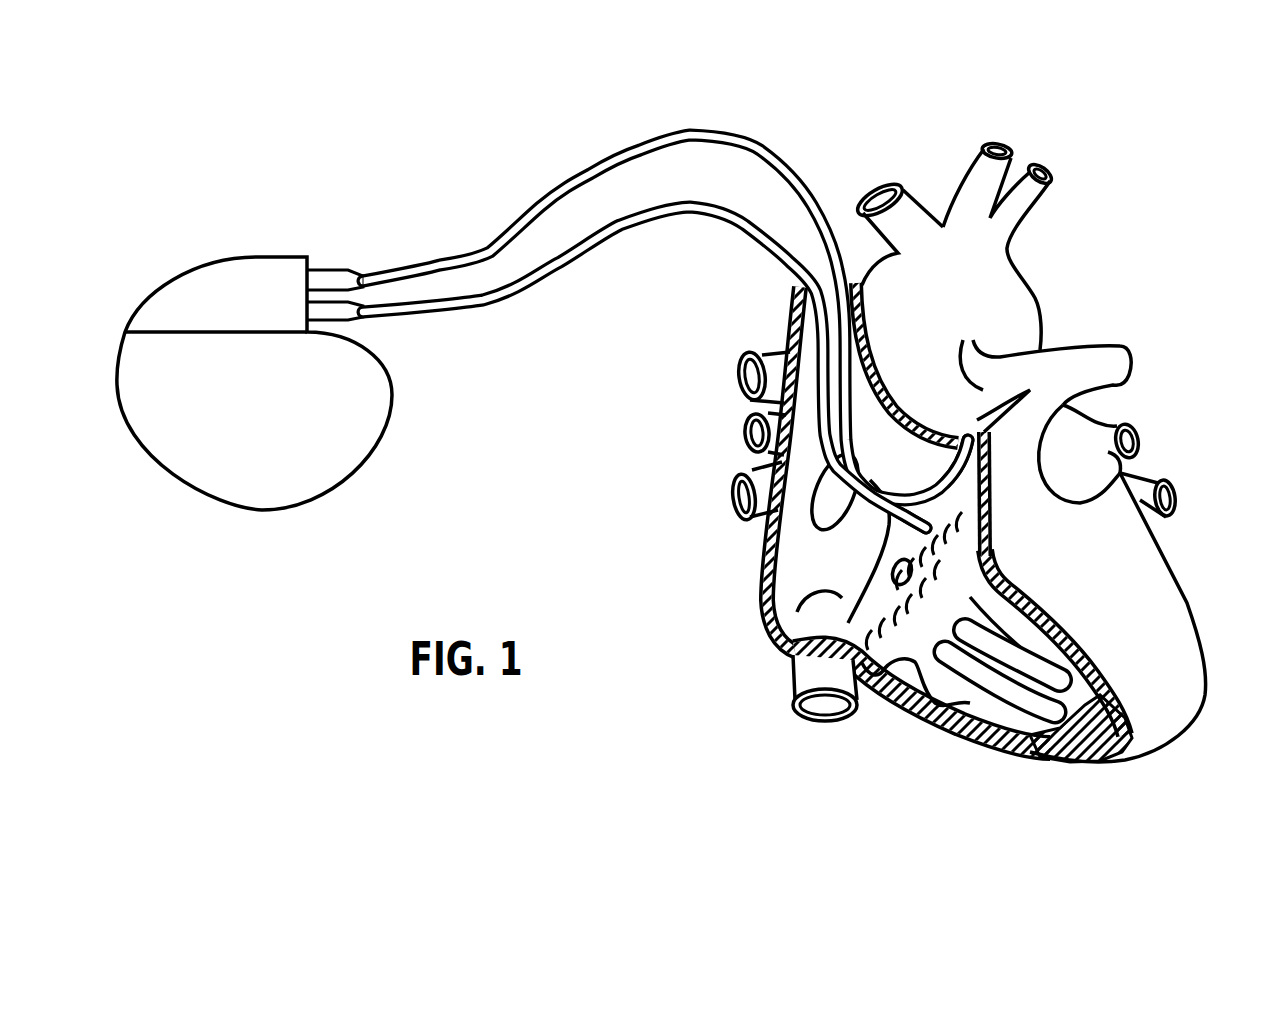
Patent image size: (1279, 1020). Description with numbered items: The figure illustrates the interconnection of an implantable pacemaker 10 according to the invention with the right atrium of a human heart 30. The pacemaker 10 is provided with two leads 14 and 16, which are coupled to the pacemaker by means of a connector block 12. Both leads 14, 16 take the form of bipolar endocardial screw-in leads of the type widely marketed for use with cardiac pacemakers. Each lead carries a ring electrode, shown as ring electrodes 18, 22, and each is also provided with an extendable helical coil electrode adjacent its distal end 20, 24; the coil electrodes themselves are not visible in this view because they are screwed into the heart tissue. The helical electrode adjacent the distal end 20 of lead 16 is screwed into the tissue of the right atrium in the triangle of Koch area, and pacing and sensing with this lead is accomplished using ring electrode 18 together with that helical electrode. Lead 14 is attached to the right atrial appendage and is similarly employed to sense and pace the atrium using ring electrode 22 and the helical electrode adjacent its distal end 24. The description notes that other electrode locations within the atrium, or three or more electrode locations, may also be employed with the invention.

The implantable pacemaker 10 is at (252, 495).
The connector block 12 is at (260, 263).
The lead 14 is at (620, 145).
The lead 16 is at (587, 240).
The ring electrode 18 is at (882, 512).
The distal end 20 is at (880, 558).
The ring electrode 22 is at (936, 478).
The distal end 24 is at (1030, 390).
The human heart 30 is at (1187, 603).